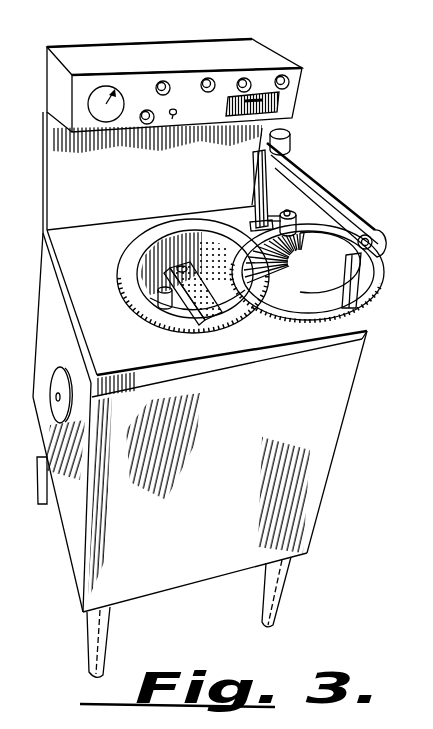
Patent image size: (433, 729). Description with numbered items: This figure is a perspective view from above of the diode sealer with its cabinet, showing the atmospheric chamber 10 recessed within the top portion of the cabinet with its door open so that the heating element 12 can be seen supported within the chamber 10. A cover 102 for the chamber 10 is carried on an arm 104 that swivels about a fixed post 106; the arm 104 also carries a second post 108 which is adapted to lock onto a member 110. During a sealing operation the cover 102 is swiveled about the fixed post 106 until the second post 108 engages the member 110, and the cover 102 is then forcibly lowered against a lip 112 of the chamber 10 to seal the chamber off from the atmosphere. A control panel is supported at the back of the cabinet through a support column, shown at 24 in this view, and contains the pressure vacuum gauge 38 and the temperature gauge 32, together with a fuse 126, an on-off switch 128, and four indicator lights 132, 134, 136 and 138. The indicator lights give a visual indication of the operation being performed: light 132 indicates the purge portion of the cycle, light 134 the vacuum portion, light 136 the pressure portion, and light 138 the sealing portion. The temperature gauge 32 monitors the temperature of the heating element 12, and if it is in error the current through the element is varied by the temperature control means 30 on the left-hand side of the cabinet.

The atmospheric chamber 10 is at (197, 242).
The heating element 12 is at (236, 296).
The back panel 24 is at (131, 254).
The temperature control means 30 is at (50, 380).
The temperature gauge 32 is at (294, 110).
The pressure vacuum gauge 38 is at (97, 120).
The cover 102 is at (310, 296).
The arm 104 is at (312, 184).
The fixed post 106 is at (257, 182).
The second post 108 is at (357, 292).
The member 110 is at (153, 311).
The lip 112 is at (196, 323).
The fuse 126 is at (146, 123).
The on-off switch 128 is at (172, 117).
The indicator light 132 is at (164, 81).
The indicator light 134 is at (210, 79).
The indicator light 136 is at (246, 79).
The indicator light 138 is at (286, 75).